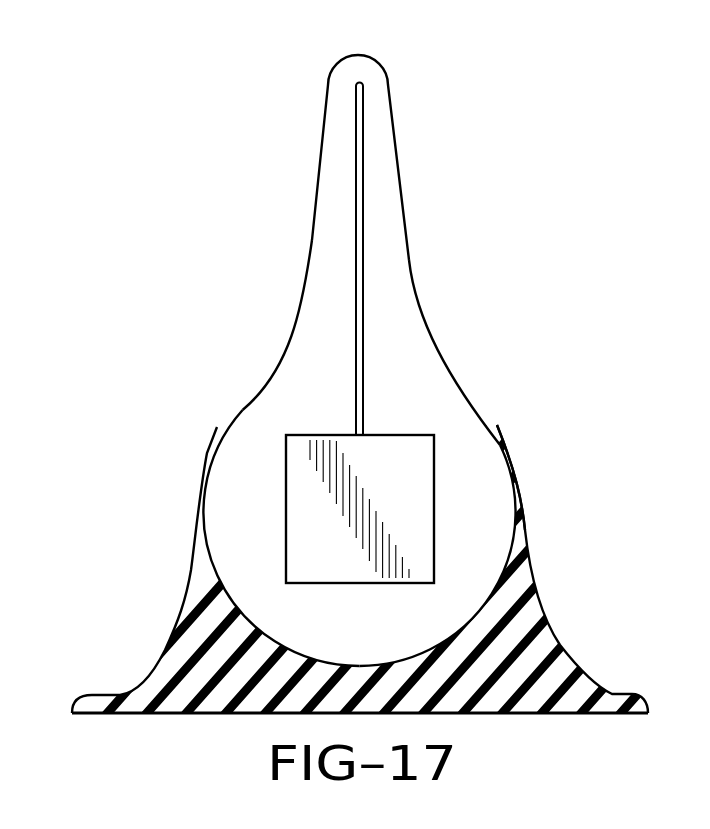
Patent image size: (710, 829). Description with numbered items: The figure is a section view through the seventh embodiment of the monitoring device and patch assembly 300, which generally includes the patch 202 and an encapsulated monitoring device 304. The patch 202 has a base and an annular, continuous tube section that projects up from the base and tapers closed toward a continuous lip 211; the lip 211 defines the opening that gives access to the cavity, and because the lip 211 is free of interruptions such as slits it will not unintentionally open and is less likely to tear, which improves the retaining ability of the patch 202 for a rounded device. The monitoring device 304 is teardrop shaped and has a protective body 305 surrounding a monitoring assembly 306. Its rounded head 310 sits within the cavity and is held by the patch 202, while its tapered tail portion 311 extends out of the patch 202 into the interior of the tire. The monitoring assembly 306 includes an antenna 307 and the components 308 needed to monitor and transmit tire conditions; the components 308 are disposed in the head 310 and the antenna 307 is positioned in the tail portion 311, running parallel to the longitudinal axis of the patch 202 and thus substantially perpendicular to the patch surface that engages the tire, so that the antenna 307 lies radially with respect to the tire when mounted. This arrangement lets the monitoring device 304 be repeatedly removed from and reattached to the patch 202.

The monitoring device and patch assembly 300 is at (386, 386).
The patch 202 is at (186, 601).
The lip 211 is at (497, 427).
The encapsulated monitoring device 304 is at (283, 354).
The protective body 305 is at (493, 518).
The monitoring assembly 306 is at (313, 434).
The antenna 307 is at (361, 139).
The components 308 is at (393, 449).
The rounded head 310 is at (233, 515).
The tapered tail portion 311 is at (326, 160).